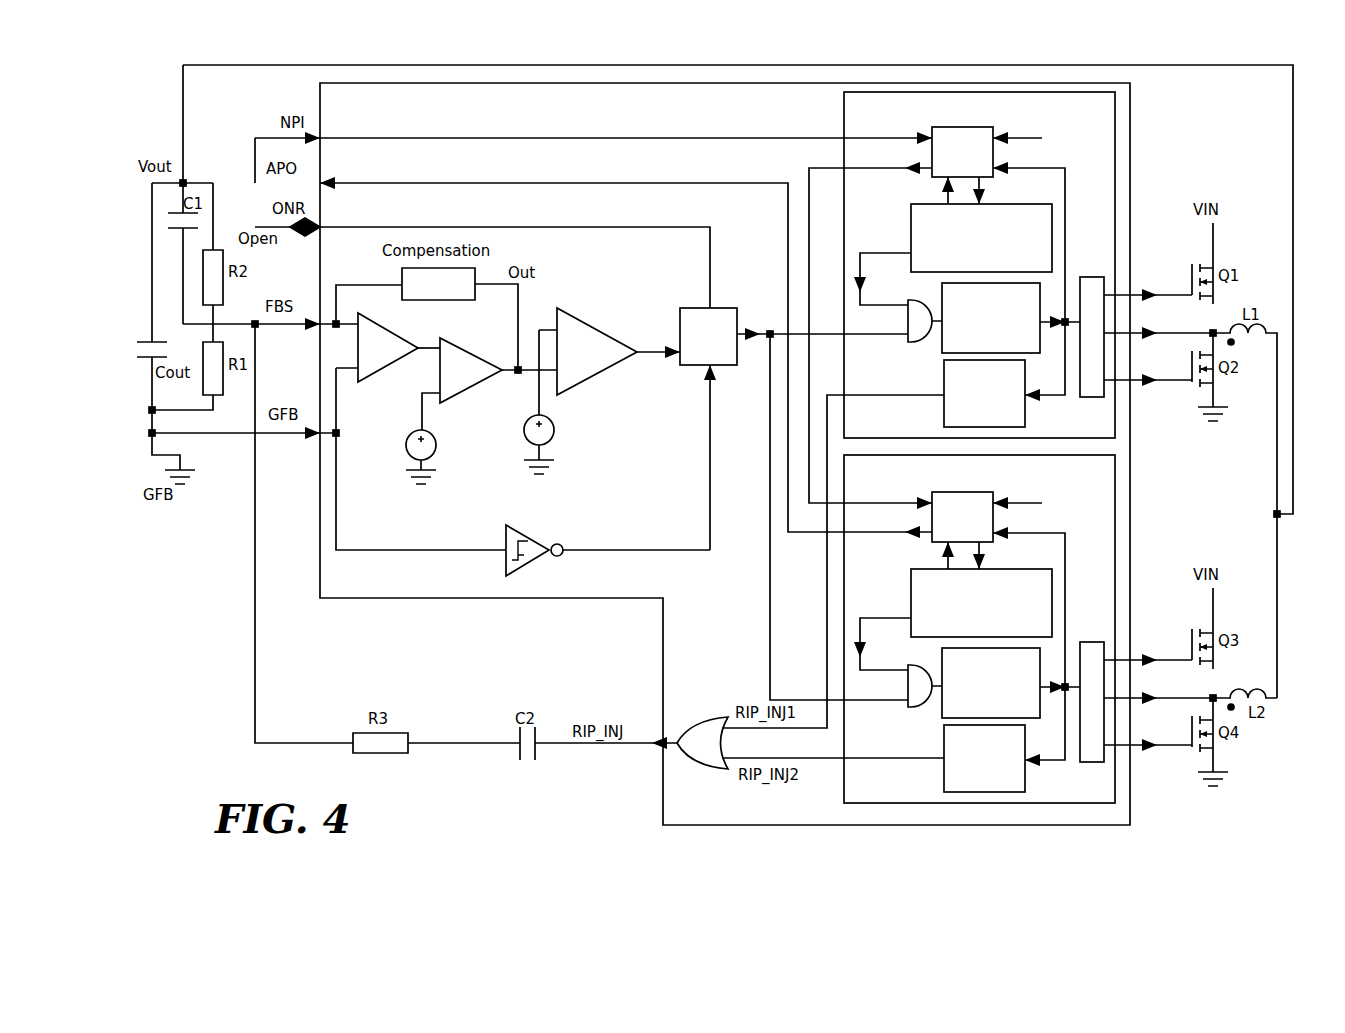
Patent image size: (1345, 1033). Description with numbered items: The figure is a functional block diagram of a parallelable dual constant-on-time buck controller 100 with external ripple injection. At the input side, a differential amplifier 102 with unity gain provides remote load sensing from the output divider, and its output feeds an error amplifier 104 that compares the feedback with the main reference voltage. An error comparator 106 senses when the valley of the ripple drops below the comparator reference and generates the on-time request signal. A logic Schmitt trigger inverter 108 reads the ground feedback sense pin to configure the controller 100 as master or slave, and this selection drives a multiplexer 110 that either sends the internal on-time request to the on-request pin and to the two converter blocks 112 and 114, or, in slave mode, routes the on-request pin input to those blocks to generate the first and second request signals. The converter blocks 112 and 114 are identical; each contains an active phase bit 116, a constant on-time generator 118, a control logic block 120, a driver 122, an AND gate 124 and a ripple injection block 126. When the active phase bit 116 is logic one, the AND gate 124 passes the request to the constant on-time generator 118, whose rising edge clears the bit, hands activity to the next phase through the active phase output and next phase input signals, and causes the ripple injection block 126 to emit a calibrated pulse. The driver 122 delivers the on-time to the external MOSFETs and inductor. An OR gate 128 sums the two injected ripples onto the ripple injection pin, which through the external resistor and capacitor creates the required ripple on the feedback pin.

The dual COT controller 100 is at (1095, 53).
The differential amplifier 102 is at (388, 370).
The error amplifier 104 is at (480, 356).
The error comparator 106 is at (600, 330).
The logic Schmitt trigger inverter 108 is at (505, 532).
The multiplexer 110 is at (688, 308).
The converter block 112 is at (1098, 206).
The converter block 114 is at (1098, 581).
The ActivePhaseBit 116 is at (911, 240).
The constant TON generator 118 is at (942, 291).
The Ctrl_Logic block 120 is at (966, 127).
The driver 122 is at (1092, 397).
The AND gate 124 is at (903, 340).
The ripple injection block 126 is at (944, 414).
The OR gate 128 is at (702, 717).